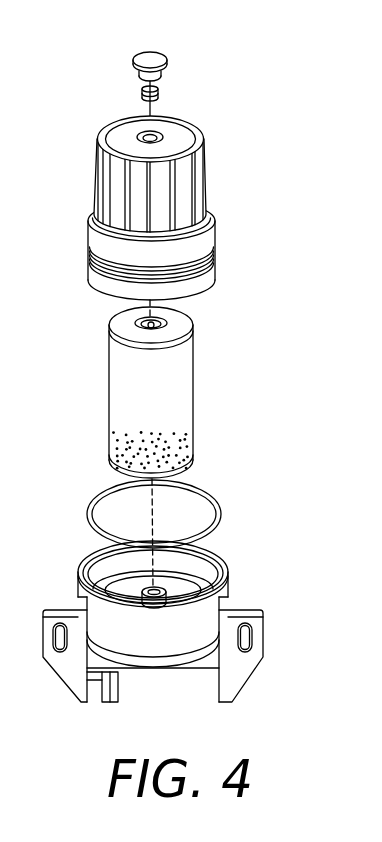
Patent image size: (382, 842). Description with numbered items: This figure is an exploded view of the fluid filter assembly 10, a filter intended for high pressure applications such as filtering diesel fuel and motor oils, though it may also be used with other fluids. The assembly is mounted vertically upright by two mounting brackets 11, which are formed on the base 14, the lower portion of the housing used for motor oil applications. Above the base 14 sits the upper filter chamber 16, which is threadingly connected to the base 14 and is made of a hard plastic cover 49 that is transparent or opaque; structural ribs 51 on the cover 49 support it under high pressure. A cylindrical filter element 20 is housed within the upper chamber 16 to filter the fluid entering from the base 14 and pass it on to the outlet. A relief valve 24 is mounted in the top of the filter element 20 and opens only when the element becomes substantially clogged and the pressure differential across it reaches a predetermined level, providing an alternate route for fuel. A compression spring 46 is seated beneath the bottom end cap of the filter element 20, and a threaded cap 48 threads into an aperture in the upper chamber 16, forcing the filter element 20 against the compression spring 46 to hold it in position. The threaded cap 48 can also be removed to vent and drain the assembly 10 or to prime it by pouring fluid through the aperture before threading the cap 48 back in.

The fluid filter assembly 10 is at (262, 338).
The mounting brackets 11 is at (66, 612).
The base 14 is at (228, 555).
The upper filter chamber 16 is at (217, 225).
The filter element 20 is at (193, 381).
The relief valve 24 is at (170, 323).
The compression spring 46 is at (159, 95).
The threaded cap 48 is at (167, 63).
The cover 49 is at (197, 140).
The structural ribs 51 is at (123, 190).